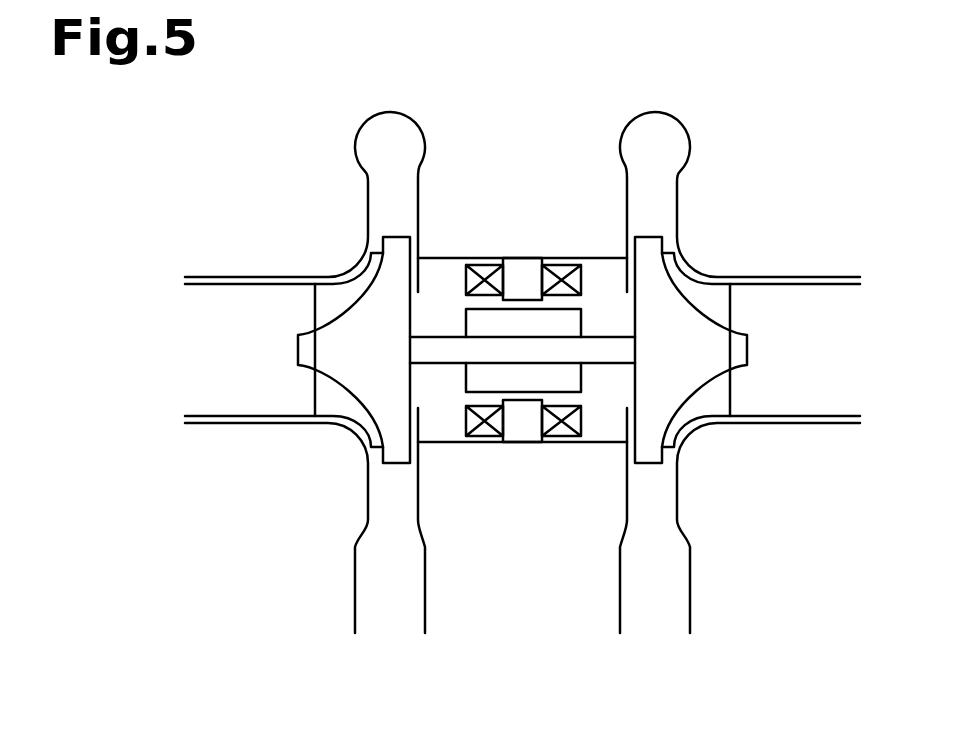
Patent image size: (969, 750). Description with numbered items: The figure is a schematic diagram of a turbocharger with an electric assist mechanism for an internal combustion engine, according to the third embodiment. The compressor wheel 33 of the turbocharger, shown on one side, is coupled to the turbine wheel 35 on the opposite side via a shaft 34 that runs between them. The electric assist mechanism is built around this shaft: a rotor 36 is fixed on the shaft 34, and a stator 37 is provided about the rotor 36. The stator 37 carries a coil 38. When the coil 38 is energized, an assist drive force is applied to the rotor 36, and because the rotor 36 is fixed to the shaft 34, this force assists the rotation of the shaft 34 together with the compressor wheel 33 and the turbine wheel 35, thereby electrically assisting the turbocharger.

The compressor wheel 33 is at (296, 350).
The shaft 34 is at (601, 365).
The turbine wheel 35 is at (750, 347).
The rotor 36 is at (582, 320).
The stator 37 is at (528, 262).
The coil 38 is at (490, 262).